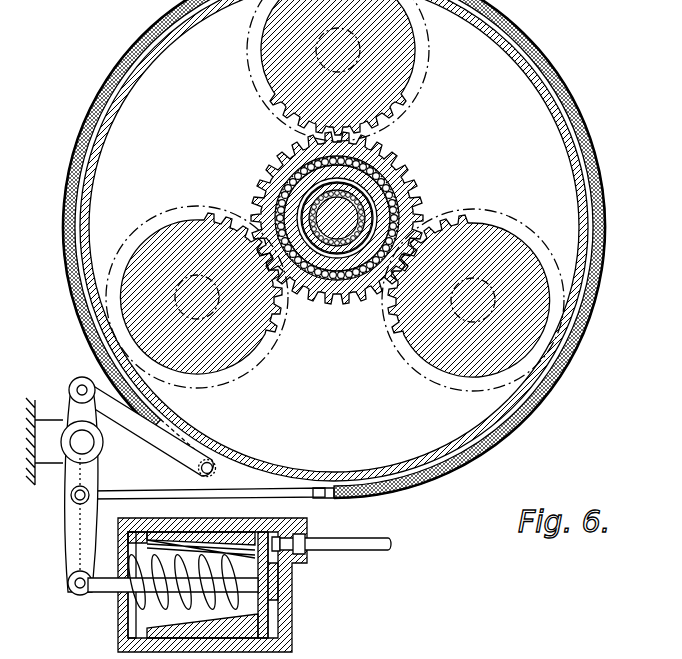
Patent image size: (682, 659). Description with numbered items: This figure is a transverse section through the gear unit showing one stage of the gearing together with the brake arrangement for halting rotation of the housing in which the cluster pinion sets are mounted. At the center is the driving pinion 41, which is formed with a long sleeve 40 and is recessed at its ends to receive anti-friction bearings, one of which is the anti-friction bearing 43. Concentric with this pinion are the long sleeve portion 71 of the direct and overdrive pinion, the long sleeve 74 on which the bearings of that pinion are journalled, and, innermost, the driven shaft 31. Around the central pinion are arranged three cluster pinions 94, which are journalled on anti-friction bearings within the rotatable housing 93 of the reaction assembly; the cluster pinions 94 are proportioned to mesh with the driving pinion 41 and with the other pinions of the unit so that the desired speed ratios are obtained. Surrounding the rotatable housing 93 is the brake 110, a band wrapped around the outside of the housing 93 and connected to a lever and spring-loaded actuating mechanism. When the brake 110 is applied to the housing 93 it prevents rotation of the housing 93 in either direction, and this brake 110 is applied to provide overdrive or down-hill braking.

The brake 110 is at (520, 28).
The rotatable housing 93 is at (574, 140).
The cluster pinions 94 is at (272, 110).
The long sleeve 40 is at (335, 233).
The long sleeve portion 71 is at (280, 195).
The driving pinion 41 is at (395, 166).
The anti-friction bearing 43 is at (397, 182).
The long sleeve 74 is at (370, 212).
The driven shaft 31 is at (332, 255).